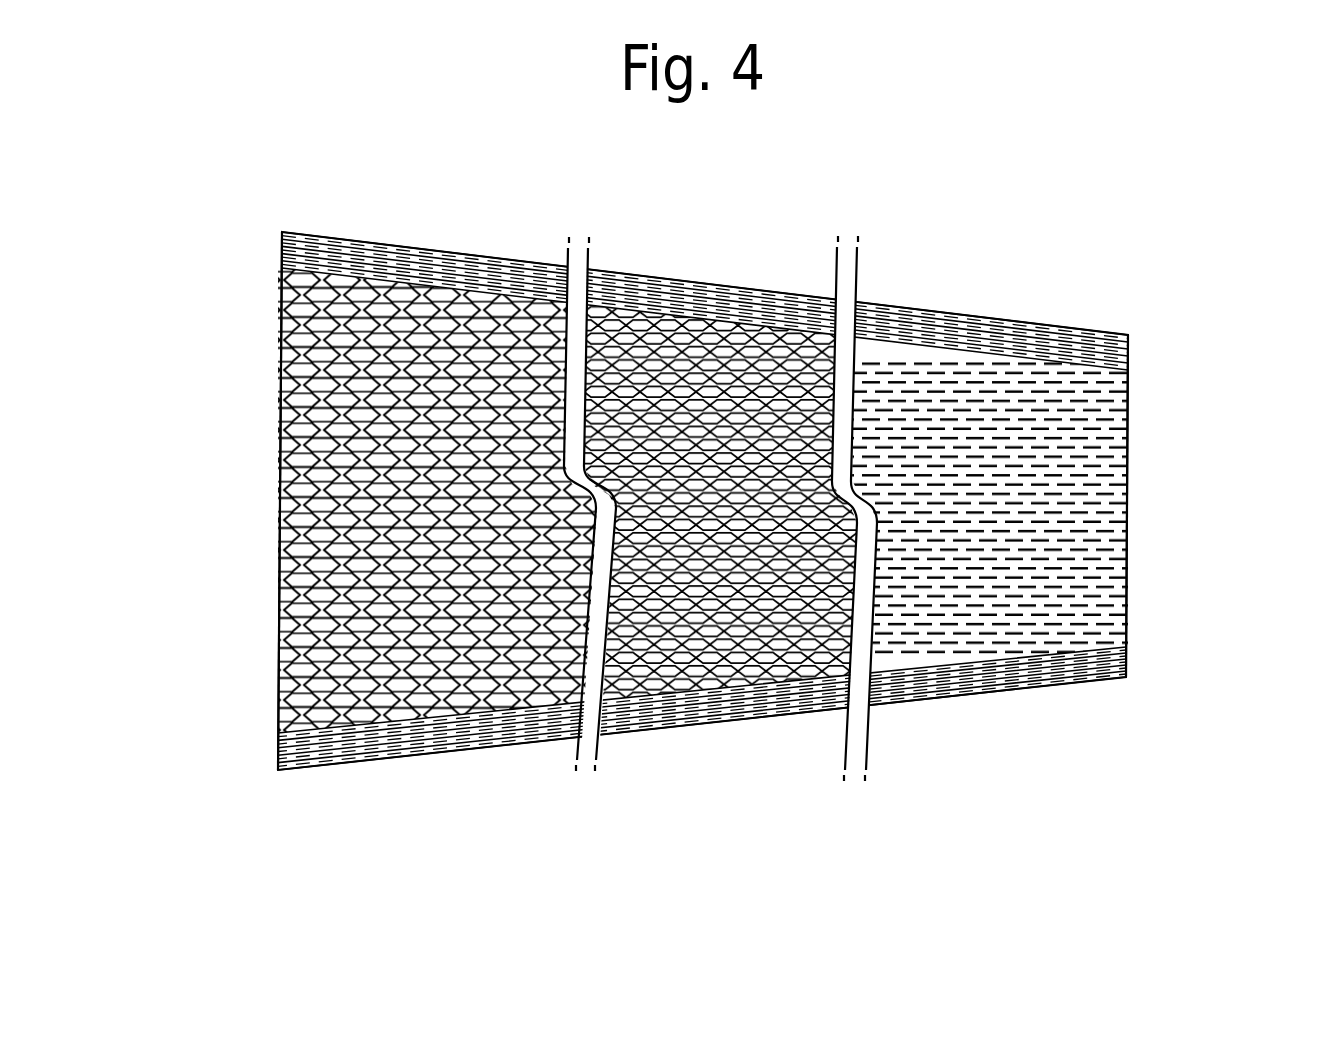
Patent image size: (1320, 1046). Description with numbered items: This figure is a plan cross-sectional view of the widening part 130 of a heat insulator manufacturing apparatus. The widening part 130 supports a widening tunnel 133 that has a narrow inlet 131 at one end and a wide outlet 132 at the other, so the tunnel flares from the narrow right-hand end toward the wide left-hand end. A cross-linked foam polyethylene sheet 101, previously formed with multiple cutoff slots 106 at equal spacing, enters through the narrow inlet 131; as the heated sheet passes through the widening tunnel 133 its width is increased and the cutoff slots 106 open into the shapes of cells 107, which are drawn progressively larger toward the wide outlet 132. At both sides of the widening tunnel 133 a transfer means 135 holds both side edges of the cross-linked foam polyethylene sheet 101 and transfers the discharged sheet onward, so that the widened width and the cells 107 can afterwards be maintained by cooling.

The widening part 130 is at (655, 776).
The cross-linked foam polyethylene sheet 101 is at (278, 601).
The wide outlet 132 is at (270, 512).
The narrow inlet 131 is at (1145, 527).
The transfer means 135 is at (650, 290).
The widening tunnel 133 is at (732, 718).
The cells 107 is at (425, 308).
The cutoff slots 106 is at (1090, 472).